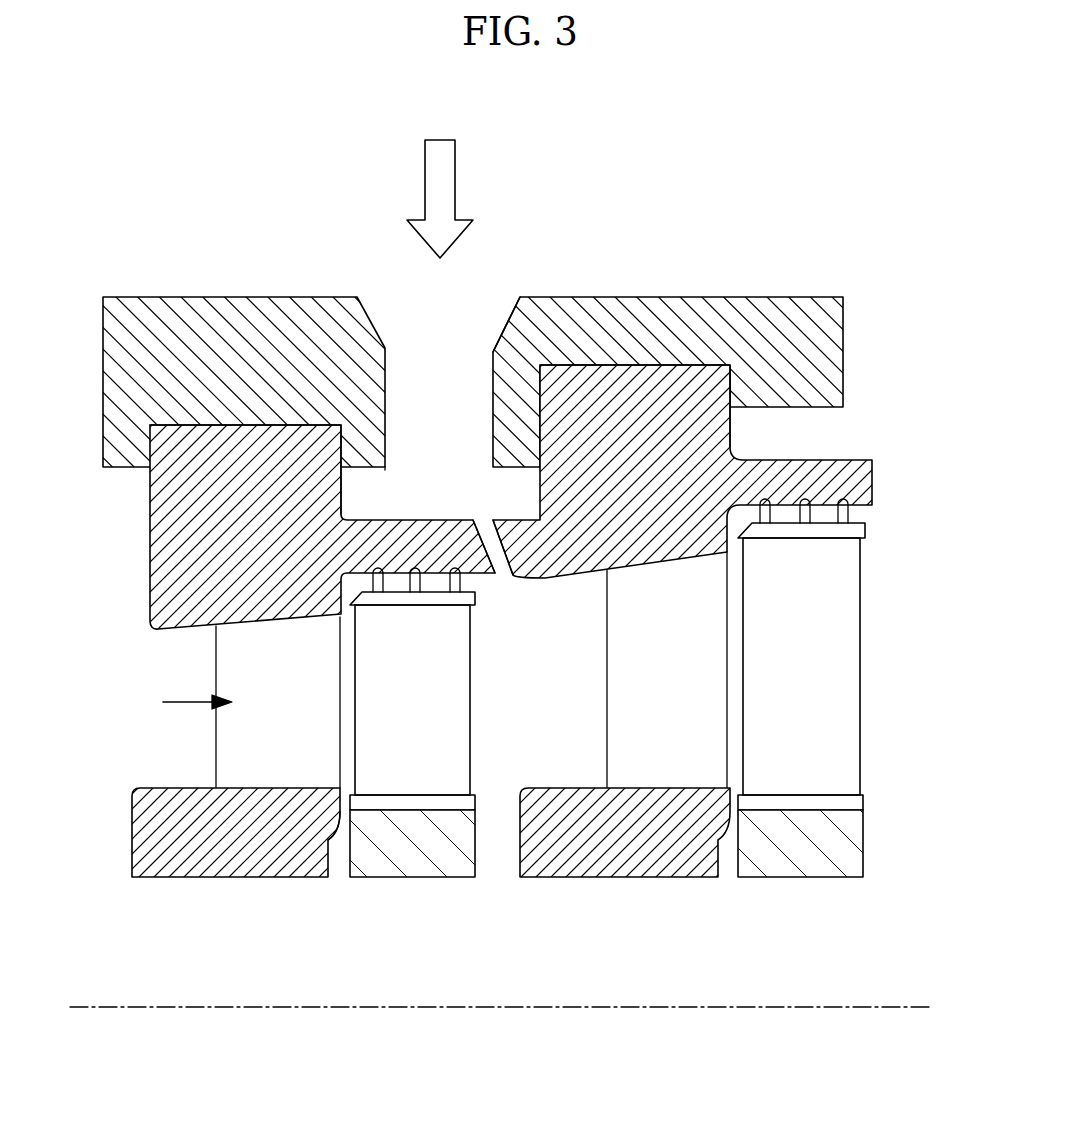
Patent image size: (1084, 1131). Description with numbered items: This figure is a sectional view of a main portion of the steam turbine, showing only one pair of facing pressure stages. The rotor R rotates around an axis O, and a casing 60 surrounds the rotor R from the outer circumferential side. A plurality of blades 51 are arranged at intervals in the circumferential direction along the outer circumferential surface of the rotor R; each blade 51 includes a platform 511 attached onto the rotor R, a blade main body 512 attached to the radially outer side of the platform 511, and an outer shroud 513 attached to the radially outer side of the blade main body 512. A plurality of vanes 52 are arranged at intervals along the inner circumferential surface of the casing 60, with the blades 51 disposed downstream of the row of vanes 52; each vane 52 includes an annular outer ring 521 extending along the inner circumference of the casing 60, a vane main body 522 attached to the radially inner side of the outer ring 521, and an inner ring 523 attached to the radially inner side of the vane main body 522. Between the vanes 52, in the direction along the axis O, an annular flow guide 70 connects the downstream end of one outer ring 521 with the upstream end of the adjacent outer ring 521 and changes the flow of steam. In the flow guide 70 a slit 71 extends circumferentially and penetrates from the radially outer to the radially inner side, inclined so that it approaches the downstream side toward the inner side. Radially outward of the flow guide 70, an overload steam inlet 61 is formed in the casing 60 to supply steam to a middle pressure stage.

The casing 60 is at (782, 300).
The overload steam inlet 61 is at (512, 305).
The flow guide 70 is at (440, 515).
The slit 71 is at (493, 527).
The vane 52 is at (503, 661).
The outer ring 521 is at (165, 554).
The vane main body 522 is at (228, 740).
The inner ring 523 is at (140, 829).
The blade 51 is at (655, 740).
The platform 511 is at (442, 798).
The blade main body 512 is at (462, 667).
The outer shroud 513 is at (468, 597).
The rotor R is at (350, 905).
The axis O is at (898, 1004).